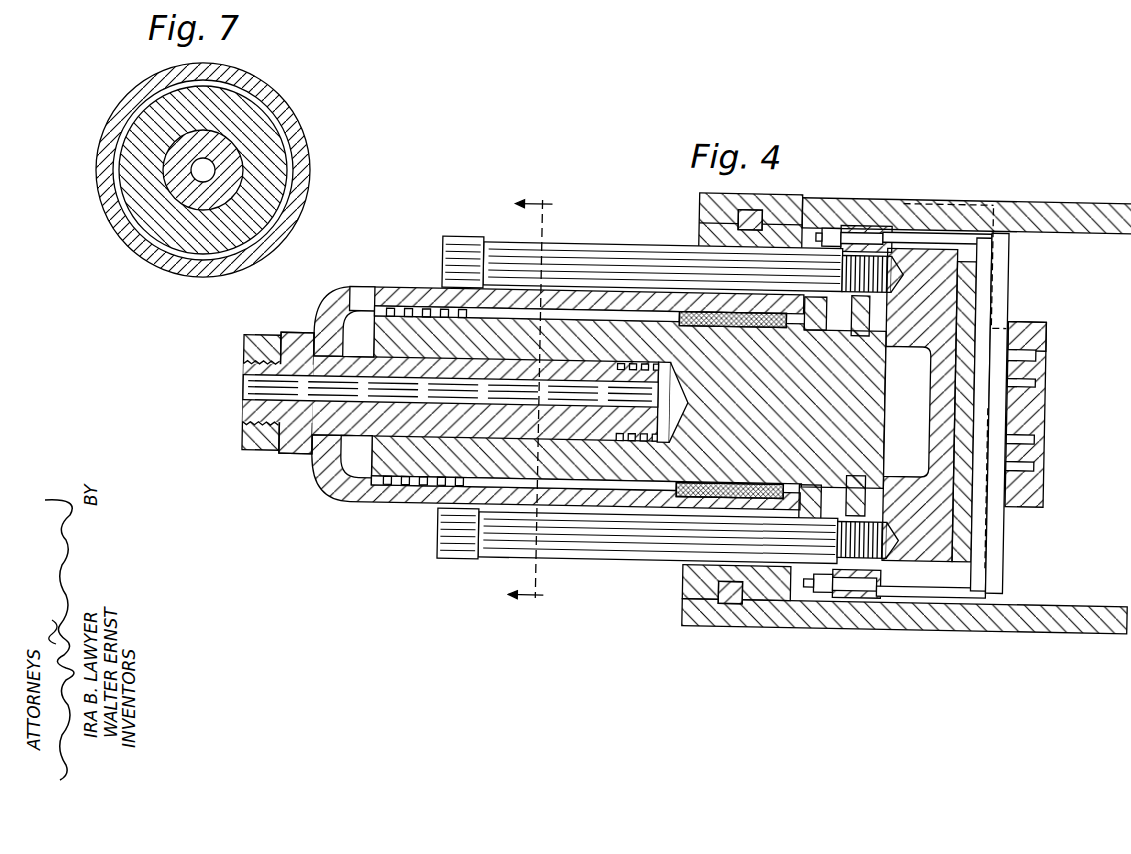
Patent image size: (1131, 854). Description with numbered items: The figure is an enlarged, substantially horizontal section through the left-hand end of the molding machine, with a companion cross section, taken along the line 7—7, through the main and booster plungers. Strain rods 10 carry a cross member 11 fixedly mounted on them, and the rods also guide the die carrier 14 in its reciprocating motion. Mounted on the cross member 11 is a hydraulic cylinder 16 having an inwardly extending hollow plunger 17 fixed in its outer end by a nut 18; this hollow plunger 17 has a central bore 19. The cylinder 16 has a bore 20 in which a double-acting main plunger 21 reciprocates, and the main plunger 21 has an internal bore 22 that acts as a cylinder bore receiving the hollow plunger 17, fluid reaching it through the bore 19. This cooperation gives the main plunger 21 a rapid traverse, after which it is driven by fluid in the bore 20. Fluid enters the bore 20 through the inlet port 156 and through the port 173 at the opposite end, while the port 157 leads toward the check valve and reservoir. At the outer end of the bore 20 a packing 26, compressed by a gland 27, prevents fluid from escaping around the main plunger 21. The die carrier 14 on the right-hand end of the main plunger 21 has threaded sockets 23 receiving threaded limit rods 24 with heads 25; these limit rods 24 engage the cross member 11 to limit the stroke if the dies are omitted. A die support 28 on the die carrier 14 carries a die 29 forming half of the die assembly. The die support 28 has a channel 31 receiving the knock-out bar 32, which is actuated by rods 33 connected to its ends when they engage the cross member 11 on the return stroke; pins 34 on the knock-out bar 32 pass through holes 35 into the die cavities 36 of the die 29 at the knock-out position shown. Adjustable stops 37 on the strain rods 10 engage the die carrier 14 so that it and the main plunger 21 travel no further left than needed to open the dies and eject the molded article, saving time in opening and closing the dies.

In FIG. 4, the section line 7— 7 is at (533, 399).
In FIG. 4, the strain rods 10 is at (1090, 204).
In FIG. 4, the cross member 11 is at (778, 235).
In FIG. 4, the die carrier 14 is at (928, 244).
In FIG. 7, the hydraulic cylinder 16 is at (288, 114).
In FIG. 4, the hydraulic cylinder 16 is at (405, 296).
In FIG. 7, the hollow plunger 17 is at (232, 174).
In FIG. 4, the hollow plunger 17 is at (300, 420).
In FIG. 4, the nut 18 is at (266, 342).
In FIG. 7, the bore 19 is at (206, 180).
In FIG. 4, the bore 19 is at (300, 383).
In FIG. 7, the bore 20 is at (262, 244).
In FIG. 4, the bore 20 is at (586, 312).
In FIG. 7, the main plunger 21 is at (268, 150).
In FIG. 4, the main plunger 21 is at (620, 335).
In FIG. 7, the internal bore 22 is at (254, 208).
In FIG. 4, the internal bore 22 is at (410, 440).
In FIG. 4, the threaded sockets 23 is at (896, 225).
In FIG. 4, the limit rods 24 is at (563, 257).
In FIG. 4, the heads 25 is at (467, 239).
In FIG. 4, the packing 26 is at (700, 498).
In FIG. 4, the gland 27 is at (812, 520).
In FIG. 4, the die support 28 is at (963, 532).
In FIG. 4, the die 29 is at (1043, 487).
In FIG. 4, the channel 31 is at (982, 277).
In FIG. 4, the knock-out bar 32 is at (1003, 257).
In FIG. 4, the rods 33 is at (975, 230).
In FIG. 4, the pins 34 is at (1038, 342).
In FIG. 4, the holes 35 is at (1012, 340).
In FIG. 4, the die cavities 36 is at (1040, 377).
In FIG. 4, the adjustable stops 37 is at (868, 222).
In FIG. 4, the inlet port 156 is at (360, 296).
In FIG. 4, the port 157 is at (343, 484).
In FIG. 4, the port 173 is at (662, 296).